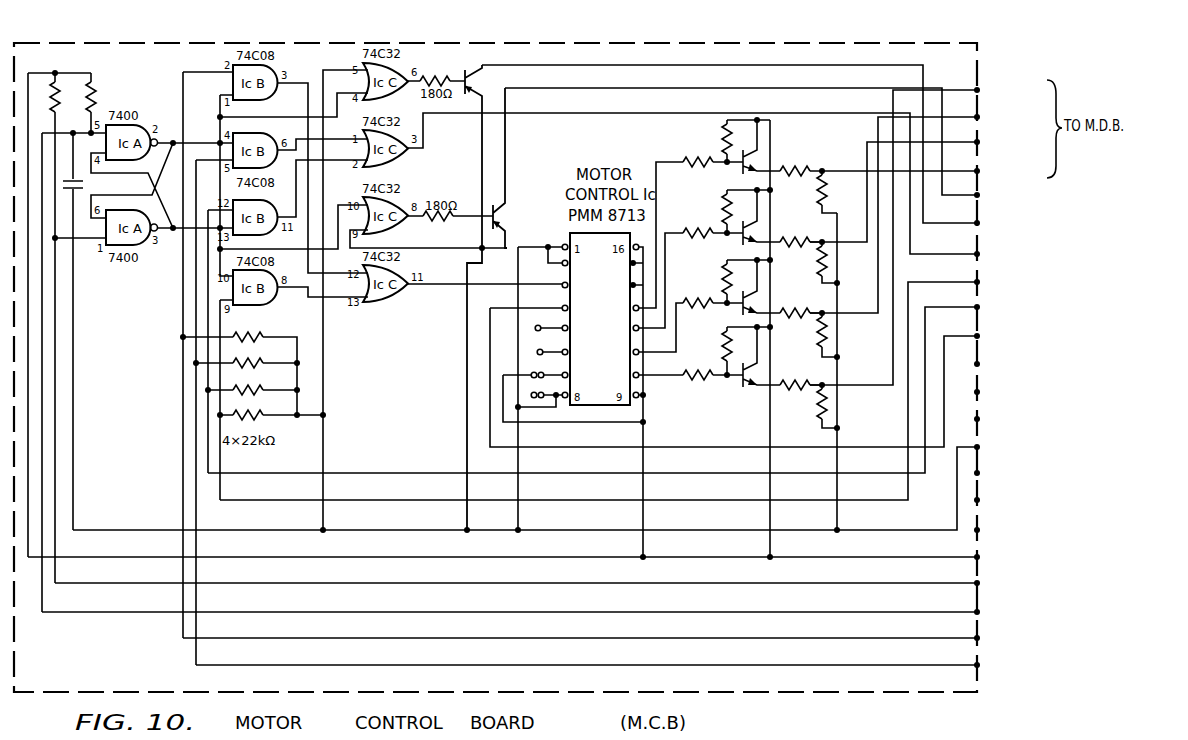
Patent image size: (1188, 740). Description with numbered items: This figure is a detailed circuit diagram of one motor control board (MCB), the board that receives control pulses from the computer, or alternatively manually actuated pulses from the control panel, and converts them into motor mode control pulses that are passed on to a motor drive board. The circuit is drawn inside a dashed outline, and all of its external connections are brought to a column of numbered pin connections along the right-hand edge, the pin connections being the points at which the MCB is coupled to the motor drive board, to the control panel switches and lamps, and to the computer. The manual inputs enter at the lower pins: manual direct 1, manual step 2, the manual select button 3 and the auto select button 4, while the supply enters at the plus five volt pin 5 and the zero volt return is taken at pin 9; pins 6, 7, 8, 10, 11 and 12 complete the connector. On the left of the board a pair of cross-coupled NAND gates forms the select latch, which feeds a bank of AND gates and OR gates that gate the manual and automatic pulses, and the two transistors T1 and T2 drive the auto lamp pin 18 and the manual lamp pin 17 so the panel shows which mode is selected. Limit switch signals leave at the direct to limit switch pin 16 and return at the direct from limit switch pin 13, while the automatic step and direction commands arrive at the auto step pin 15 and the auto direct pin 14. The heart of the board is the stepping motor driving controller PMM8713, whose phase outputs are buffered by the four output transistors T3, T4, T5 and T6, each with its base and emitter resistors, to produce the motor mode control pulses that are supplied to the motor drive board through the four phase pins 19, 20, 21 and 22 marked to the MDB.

The manual direct terminal 1 is at (659, 665).
The manual step terminal 2 is at (650, 638).
The manual select button terminal 3 is at (601, 612).
The auto select button terminal 4 is at (602, 583).
The +5V supply terminal 5 is at (539, 557).
The terminal 6 is at (983, 530).
The terminal 7 is at (983, 500).
The terminal 8 is at (983, 473).
The 0V terminal 9 is at (564, 483).
The terminal 10 is at (988, 419).
The terminal 11 is at (987, 392).
The terminal 12 is at (988, 364).
The direct from limit switch terminal 13 is at (824, 377).
The auto direct terminal 14 is at (663, 384).
The auto step terminal 15 is at (662, 385).
The direct to limit switch terminal 16 is at (786, 189).
The manual lamp terminal 17 is at (803, 150).
The auto lamp terminal 18 is at (804, 147).
The phase 1 output terminal to MDB 19 is at (933, 171).
The phase 2 output terminal to MDB 20 is at (927, 186).
The phase 3 output terminal to MDB 21 is at (927, 209).
The phase 4 output terminal to MDB 22 is at (927, 232).
The transistor 2N3642 T1 is at (478, 290).
The transistor 2N3642 T2 is at (523, 168).
The transistor 2N5195 T3 is at (770, 165).
The transistor 2N5195 T4 is at (760, 236).
The transistor 2N5195 T5 is at (760, 308).
The transistor 2N5195 T6 is at (761, 377).